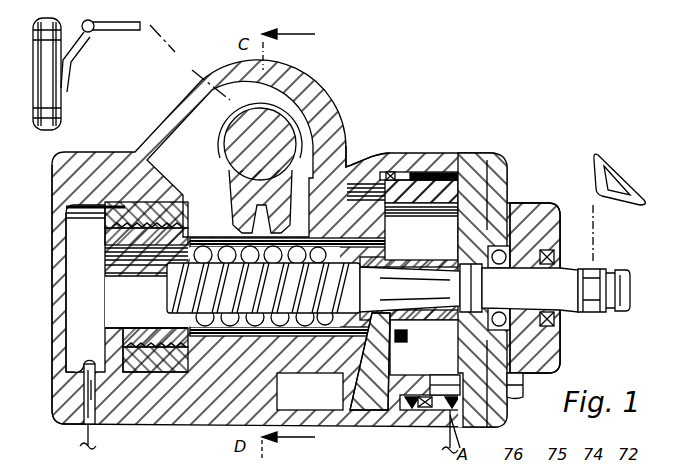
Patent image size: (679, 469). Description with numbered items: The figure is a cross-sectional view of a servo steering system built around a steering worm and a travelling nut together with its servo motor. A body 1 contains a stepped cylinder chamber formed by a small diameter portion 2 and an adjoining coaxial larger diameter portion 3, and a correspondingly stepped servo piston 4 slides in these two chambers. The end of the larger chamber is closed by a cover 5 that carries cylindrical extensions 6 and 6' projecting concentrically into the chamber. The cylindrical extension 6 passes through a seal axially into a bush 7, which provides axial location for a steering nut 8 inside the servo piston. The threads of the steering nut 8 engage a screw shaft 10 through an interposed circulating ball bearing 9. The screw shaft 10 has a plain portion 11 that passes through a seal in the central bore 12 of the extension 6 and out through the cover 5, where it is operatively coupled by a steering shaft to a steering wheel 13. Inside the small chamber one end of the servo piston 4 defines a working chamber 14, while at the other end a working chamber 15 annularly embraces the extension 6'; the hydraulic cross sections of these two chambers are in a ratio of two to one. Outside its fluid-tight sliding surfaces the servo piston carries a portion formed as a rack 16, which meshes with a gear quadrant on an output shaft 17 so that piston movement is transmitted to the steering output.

The body 1 is at (165, 150).
The small diameter portion 2 is at (126, 378).
The larger diameter portion 3 is at (445, 168).
The servo piston 4 is at (378, 160).
The cover 5 is at (525, 210).
The cylindrical extension 6 is at (389, 397).
The cylindrical extension 6' is at (413, 430).
The bush 7 is at (348, 166).
The steering nut 8 is at (228, 338).
The circulating ball bearing 9 is at (258, 328).
The screw shaft 10 is at (272, 300).
The plain portion 11 is at (486, 200).
The central bore 12 is at (373, 325).
The steering wheel 13 is at (608, 185).
The working chamber 14 is at (68, 352).
The working chamber 15 is at (438, 392).
The rack 16 is at (284, 195).
The output shaft 17 is at (243, 143).